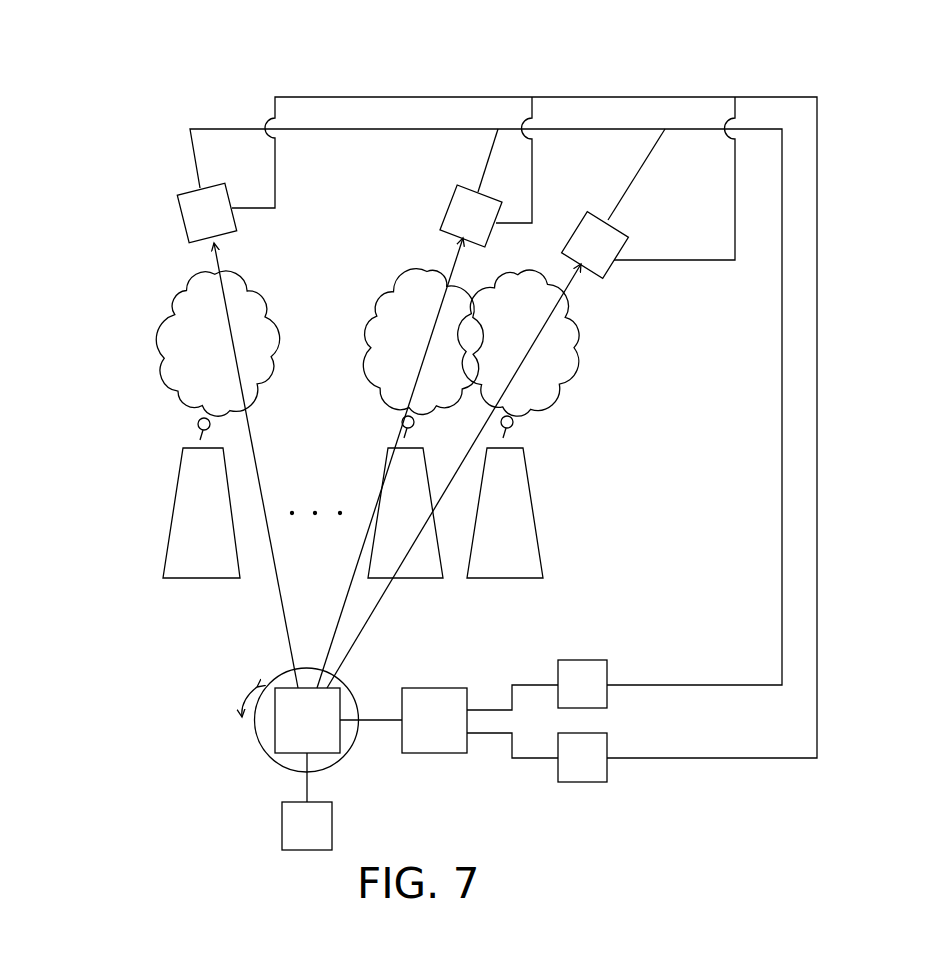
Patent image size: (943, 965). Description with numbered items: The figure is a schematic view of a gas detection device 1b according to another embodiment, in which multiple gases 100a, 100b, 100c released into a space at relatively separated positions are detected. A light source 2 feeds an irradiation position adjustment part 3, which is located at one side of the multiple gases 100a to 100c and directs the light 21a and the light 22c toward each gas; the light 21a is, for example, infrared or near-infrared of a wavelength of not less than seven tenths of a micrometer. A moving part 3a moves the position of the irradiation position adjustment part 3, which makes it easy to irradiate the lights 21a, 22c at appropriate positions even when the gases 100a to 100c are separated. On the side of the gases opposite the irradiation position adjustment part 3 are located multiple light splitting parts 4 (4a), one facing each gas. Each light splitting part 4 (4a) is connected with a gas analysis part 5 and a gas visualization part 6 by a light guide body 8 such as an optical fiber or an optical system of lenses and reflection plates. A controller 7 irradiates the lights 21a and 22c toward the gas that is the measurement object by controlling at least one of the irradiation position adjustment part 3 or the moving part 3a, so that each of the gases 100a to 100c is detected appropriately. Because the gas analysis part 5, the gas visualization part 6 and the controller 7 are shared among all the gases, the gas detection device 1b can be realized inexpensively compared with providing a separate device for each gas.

The gas detection device 1b is at (118, 122).
The light guide body 8 is at (332, 128).
The light splitting part 4 is at (387, 249).
The light splitting part 4a is at (178, 216).
The light 21a is at (213, 465).
The light 22c is at (282, 598).
The gas 100a is at (165, 375).
The gas 100b is at (368, 375).
The gas 100c is at (577, 358).
The irradiation position adjustment part 3 is at (287, 730).
The moving part 3a is at (345, 740).
The controller 7 is at (440, 760).
The light source 2 is at (300, 838).
The gas analysis part 5 is at (592, 660).
The gas visualization part 6 is at (592, 782).